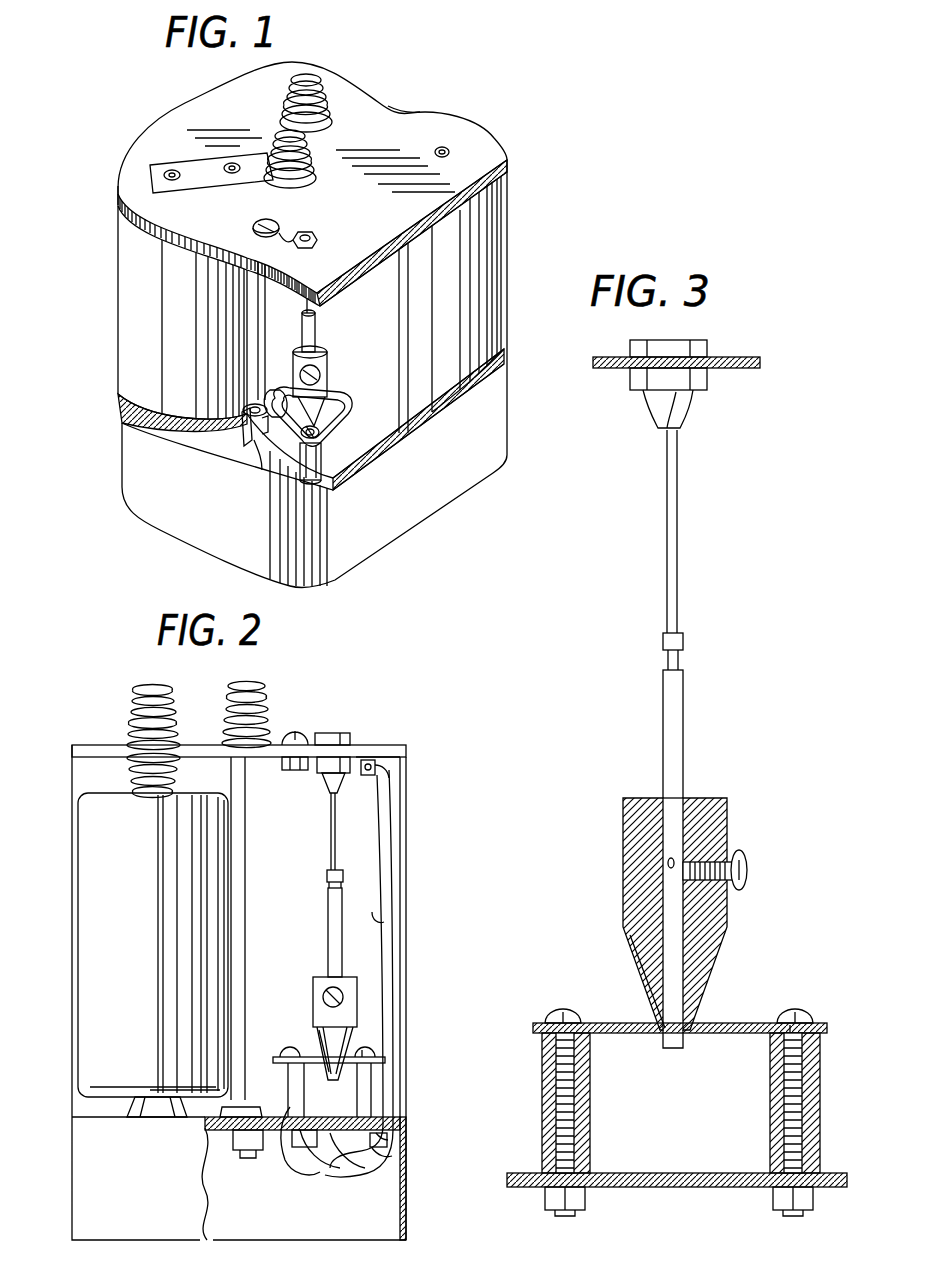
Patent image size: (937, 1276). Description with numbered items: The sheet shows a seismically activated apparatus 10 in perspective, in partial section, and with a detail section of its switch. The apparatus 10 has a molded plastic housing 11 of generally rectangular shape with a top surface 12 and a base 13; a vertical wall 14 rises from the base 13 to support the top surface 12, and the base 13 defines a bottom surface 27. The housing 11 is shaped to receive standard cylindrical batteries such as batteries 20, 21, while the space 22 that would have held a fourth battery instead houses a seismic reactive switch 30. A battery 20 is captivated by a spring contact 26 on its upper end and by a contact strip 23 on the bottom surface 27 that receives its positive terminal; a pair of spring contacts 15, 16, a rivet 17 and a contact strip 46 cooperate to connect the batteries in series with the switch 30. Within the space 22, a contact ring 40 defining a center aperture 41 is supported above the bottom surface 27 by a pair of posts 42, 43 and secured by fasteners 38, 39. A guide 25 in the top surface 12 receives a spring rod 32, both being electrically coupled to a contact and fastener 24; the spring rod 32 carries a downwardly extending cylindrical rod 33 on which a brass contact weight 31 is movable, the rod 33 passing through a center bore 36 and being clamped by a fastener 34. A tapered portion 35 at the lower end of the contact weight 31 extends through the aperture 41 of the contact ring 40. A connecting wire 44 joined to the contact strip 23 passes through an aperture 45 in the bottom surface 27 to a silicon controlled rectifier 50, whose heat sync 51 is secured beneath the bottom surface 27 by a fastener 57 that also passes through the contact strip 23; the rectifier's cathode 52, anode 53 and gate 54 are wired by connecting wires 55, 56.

In FIG. 1, the seismically activated apparatus 10 is at (522, 266).
In FIG. 2, the seismically activated apparatus 10 is at (50, 770).
In FIG. 1, the housing 11 is at (405, 113).
In FIG. 2, the housing 11 is at (406, 752).
In FIG. 1, the top surface 12 is at (432, 130).
In FIG. 2, the top surface 12 is at (365, 744).
In FIG. 3, the top surface 12 is at (712, 358).
In FIG. 2, the base 13 is at (82, 1148).
In FIG. 1, the vertical wall 14 is at (492, 388).
In FIG. 2, the vertical wall 14 is at (382, 920).
In FIG. 1, the spring contact 15 is at (320, 80).
In FIG. 2, the spring contact 15 is at (130, 692).
In FIG. 1, the spring contact 16 is at (310, 140).
In FIG. 2, the spring contact 16 is at (258, 690).
In FIG. 1, the rivet 17 is at (448, 148).
In FIG. 1, the battery 20 is at (130, 300).
In FIG. 2, the battery 20 is at (100, 830).
In FIG. 1, the battery 21 is at (500, 205).
In FIG. 1, the space 22 is at (260, 474).
In FIG. 2, the space 22 is at (397, 958).
In FIG. 1, the contact strip 23 is at (245, 410).
In FIG. 2, the contact strip 23 is at (190, 1118).
In FIG. 1, the contact and fastener 24 is at (270, 226).
In FIG. 2, the contact and fastener 24 is at (298, 733).
In FIG. 1, the guide 25 is at (312, 238).
In FIG. 2, the guide 25 is at (340, 733).
In FIG. 3, the guide 25 is at (690, 393).
In FIG. 2, the spring contact 26 is at (135, 775).
In FIG. 1, the bottom surface 27 is at (270, 476).
In FIG. 2, the bottom surface 27 is at (253, 1150).
In FIG. 3, the bottom surface 27 is at (662, 1188).
In FIG. 1, the seismic reactive switch 30 is at (381, 440).
In FIG. 2, the seismic reactive switch 30 is at (372, 990).
In FIG. 1, the contact weight 31 is at (327, 360).
In FIG. 2, the contact weight 31 is at (318, 980).
In FIG. 3, the contact weight 31 is at (728, 800).
In FIG. 1, the spring rod 32 is at (312, 298).
In FIG. 2, the spring rod 32 is at (330, 812).
In FIG. 3, the spring rod 32 is at (680, 470).
In FIG. 1, the cylindrical rod 33 is at (316, 330).
In FIG. 2, the cylindrical rod 33 is at (325, 916).
In FIG. 3, the cylindrical rod 33 is at (686, 705).
In FIG. 1, the fastener 34 is at (320, 373).
In FIG. 2, the fastener 34 is at (324, 998).
In FIG. 3, the fastener 34 is at (748, 866).
In FIG. 1, the tapered portion 35 is at (285, 420).
In FIG. 2, the tapered portion 35 is at (356, 1032).
In FIG. 3, the tapered portion 35 is at (735, 955).
In FIG. 3, the center bore 36 is at (667, 868).
In FIG. 1, the fastener 38 is at (325, 452).
In FIG. 2, the fastener 38 is at (365, 1053).
In FIG. 3, the fastener 38 is at (797, 1013).
In FIG. 2, the fastener 39 is at (287, 1047).
In FIG. 3, the fastener 39 is at (563, 1012).
In FIG. 1, the contact ring 40 is at (318, 436).
In FIG. 2, the contact ring 40 is at (362, 1040).
In FIG. 3, the contact ring 40 is at (770, 1023).
In FIG. 1, the center aperture 41 is at (336, 425).
In FIG. 2, the center aperture 41 is at (329, 1060).
In FIG. 3, the center aperture 41 is at (718, 1025).
In FIG. 1, the post 42 is at (318, 470).
In FIG. 2, the post 42 is at (375, 1080).
In FIG. 3, the post 42 is at (818, 1075).
In FIG. 2, the post 43 is at (290, 1080).
In FIG. 3, the post 43 is at (545, 1068).
In FIG. 1, the connecting wire 44 is at (243, 440).
In FIG. 1, the aperture 45 is at (265, 438).
In FIG. 1, the contact strip 46 is at (149, 170).
In FIG. 2, the silicon controlled rectifier 50 is at (303, 1140).
In FIG. 2, the heat sync 51 is at (298, 1135).
In FIG. 2, the cathode 52 is at (330, 1150).
In FIG. 2, the anode 53 is at (385, 1152).
In FIG. 2, the gate 54 is at (386, 1137).
In FIG. 2, the connecting wire 55 is at (386, 844).
In FIG. 2, the connecting wire 56 is at (360, 811).
In FIG. 2, the fastener 57 is at (200, 1087).